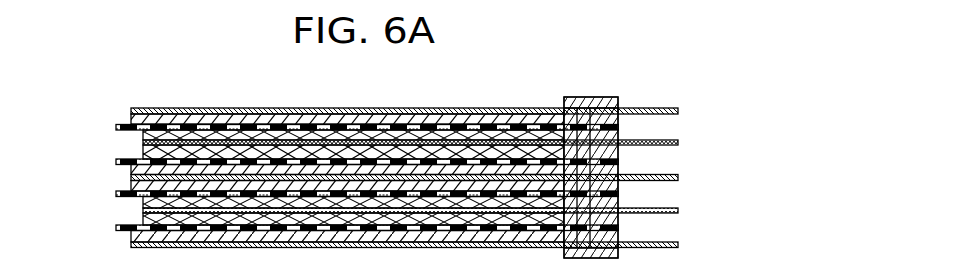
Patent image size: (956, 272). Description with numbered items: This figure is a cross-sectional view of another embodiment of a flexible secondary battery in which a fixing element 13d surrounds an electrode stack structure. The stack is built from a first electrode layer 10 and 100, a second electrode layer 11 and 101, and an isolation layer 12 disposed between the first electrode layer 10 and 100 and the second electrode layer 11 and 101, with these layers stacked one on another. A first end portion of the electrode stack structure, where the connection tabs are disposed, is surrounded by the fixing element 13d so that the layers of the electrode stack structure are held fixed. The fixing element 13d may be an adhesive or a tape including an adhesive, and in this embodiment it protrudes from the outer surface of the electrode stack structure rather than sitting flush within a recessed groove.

The second electrode layer 11 is at (132, 113).
The second electrode layer 101 is at (132, 121).
The isolation layer 12 is at (143, 134).
The first electrode layer 100 is at (145, 145).
The first electrode layer 10 is at (132, 176).
The fixing element 13d is at (604, 97).